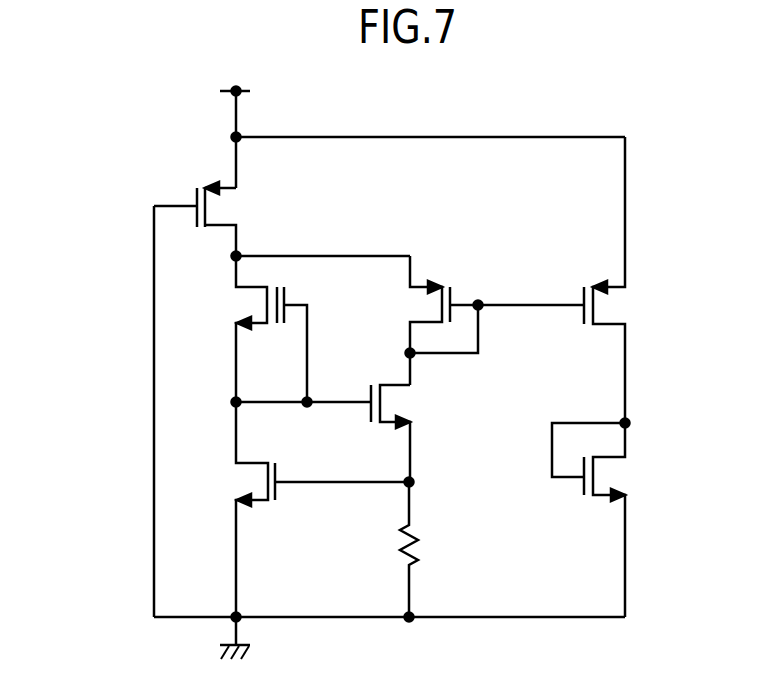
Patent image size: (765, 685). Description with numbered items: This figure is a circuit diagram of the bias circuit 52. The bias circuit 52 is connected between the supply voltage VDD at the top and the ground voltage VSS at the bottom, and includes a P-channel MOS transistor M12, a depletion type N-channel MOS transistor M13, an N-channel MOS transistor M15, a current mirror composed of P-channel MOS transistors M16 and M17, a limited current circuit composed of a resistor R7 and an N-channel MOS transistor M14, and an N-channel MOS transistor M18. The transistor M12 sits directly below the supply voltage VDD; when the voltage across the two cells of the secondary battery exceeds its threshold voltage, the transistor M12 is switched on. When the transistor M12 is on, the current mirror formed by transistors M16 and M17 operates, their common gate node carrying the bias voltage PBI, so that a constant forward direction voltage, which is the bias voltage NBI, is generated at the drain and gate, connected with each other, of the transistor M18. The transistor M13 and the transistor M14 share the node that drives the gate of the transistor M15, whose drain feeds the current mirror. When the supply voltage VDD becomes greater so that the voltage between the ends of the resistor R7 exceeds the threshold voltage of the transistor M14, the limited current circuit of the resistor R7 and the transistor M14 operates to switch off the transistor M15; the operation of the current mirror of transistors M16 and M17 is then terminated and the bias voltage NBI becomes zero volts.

The bias circuit 52 is at (87, 64).
The P-channel MOS transistor M12 is at (195, 207).
The depletion type N-channel MOS transistor M13 is at (288, 331).
The N-channel MOS transistor M14 is at (322, 509).
The N-channel MOS transistor M15 is at (378, 418).
The P-channel MOS transistor M16 is at (442, 320).
The P-channel MOS transistor M17 is at (591, 280).
The N-channel MOS transistor M18 is at (592, 520).
The resistor R7 is at (428, 549).
The supply voltage VDD is at (232, 101).
The ground voltage VSS is at (260, 639).
The bias voltage PBI is at (529, 294).
The bias voltage NBI is at (591, 435).